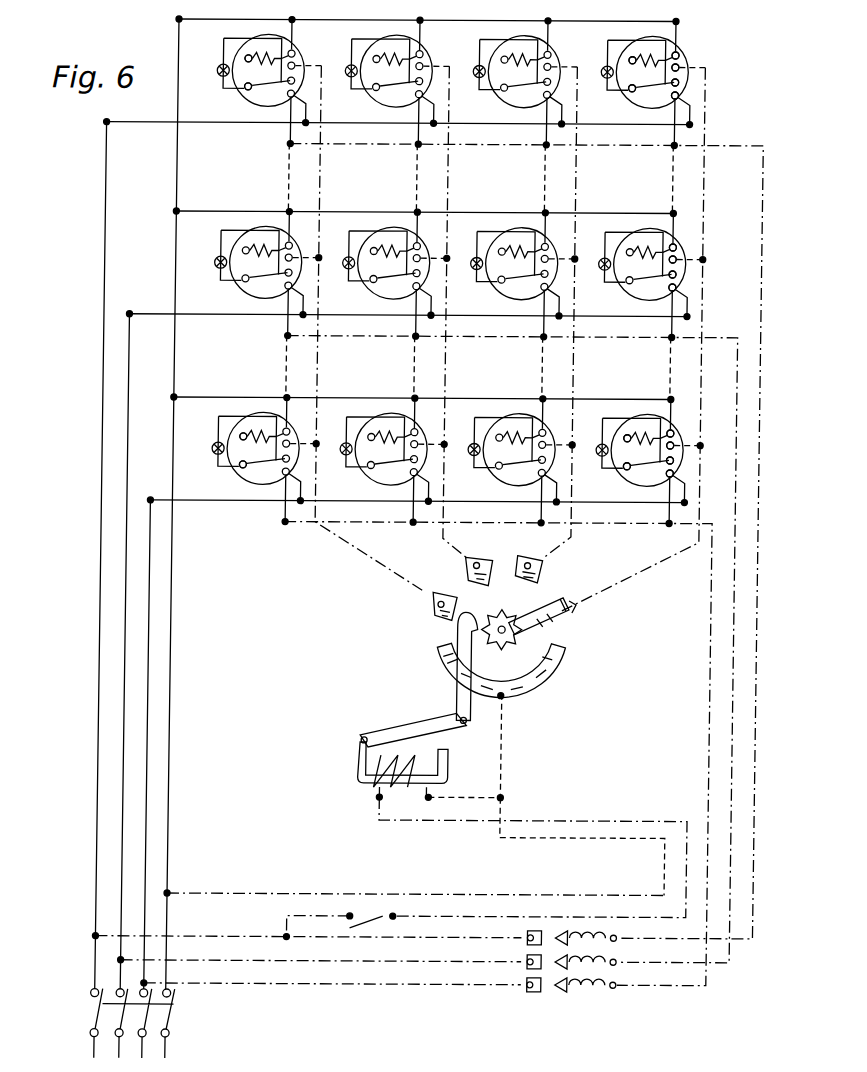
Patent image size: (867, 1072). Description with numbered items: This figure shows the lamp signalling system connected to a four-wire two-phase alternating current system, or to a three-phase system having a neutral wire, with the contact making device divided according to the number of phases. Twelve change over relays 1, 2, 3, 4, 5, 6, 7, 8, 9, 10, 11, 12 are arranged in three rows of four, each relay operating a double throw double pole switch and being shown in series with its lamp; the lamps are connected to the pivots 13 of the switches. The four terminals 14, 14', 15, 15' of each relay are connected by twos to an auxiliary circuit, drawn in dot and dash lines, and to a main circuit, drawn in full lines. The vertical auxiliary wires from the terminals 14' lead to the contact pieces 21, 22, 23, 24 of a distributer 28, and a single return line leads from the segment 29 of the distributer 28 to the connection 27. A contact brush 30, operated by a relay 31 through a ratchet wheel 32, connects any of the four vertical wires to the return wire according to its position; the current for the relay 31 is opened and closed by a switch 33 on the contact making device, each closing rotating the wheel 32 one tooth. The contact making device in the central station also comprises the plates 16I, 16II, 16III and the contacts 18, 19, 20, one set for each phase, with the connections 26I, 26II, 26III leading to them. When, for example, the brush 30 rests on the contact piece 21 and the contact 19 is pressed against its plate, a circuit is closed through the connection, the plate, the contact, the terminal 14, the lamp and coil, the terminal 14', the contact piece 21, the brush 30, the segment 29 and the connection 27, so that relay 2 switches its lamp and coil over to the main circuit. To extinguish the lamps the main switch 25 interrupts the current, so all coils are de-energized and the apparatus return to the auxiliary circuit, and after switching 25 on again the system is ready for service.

The change over relay 1 is at (641, 49).
The change over relay 2 is at (633, 232).
The change over relay 3 is at (646, 418).
The change over relay 4 is at (506, 46).
The change over relay 5 is at (513, 230).
The change over relay 6 is at (516, 418).
The change over relay 7 is at (376, 45).
The change over relay 8 is at (393, 230).
The change over relay 9 is at (386, 418).
The change over relay 10 is at (250, 45).
The change over relay 11 is at (253, 232).
The change over relay 12 is at (251, 420).
The pivots of the switches 13 is at (247, 86).
The terminal 14 is at (739, 298).
The terminal 14' is at (741, 237).
The terminal 15 is at (739, 270).
The terminal 15' is at (741, 227).
The plate 16I is at (541, 945).
The plate 16II is at (541, 970).
The plate 16III is at (543, 992).
The contact 18 is at (577, 933).
The contact 19 is at (606, 978).
The contact 20 is at (578, 992).
The contact piece 21 is at (583, 615).
The contact piece 22 is at (550, 563).
The contact piece 23 is at (476, 560).
The contact piece 24 is at (441, 605).
The main switch 25 is at (156, 1012).
The connection 26I is at (108, 935).
The connection 26II is at (133, 959).
The connection 26III is at (156, 983).
The connection 27 is at (181, 891).
The distributer 28 is at (528, 657).
The segment 29 is at (530, 687).
The contact brush 30 is at (572, 626).
The relay 31 is at (373, 781).
The ratchet wheel 32 is at (516, 606).
The switch 33 is at (372, 909).